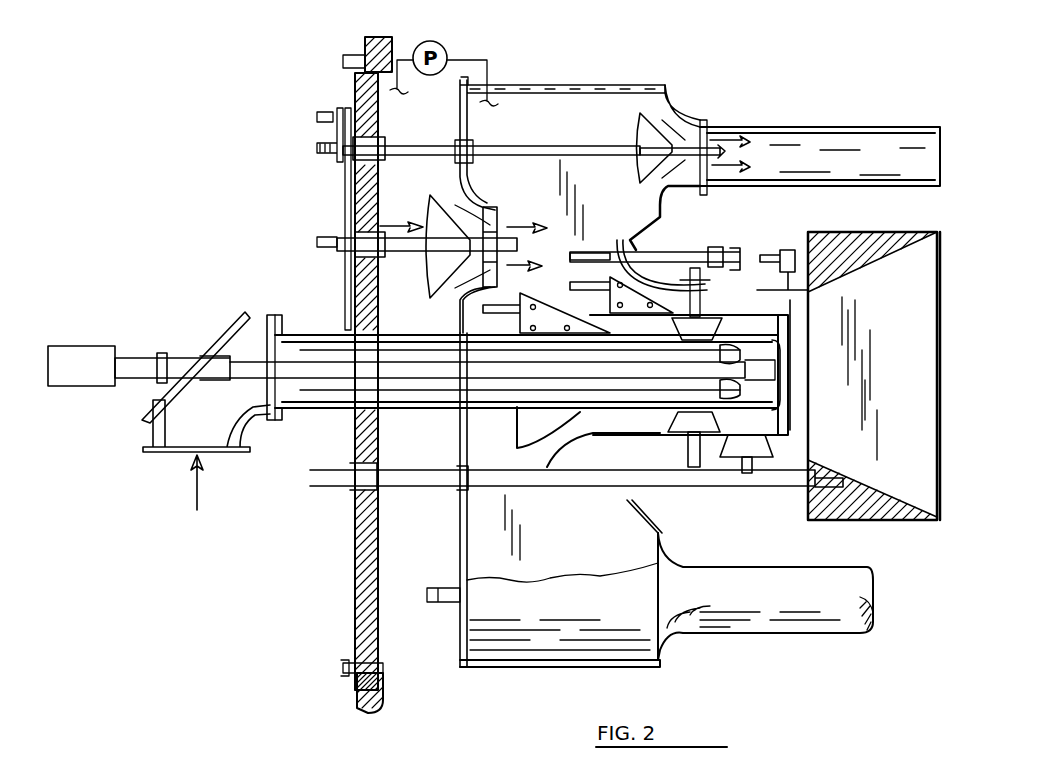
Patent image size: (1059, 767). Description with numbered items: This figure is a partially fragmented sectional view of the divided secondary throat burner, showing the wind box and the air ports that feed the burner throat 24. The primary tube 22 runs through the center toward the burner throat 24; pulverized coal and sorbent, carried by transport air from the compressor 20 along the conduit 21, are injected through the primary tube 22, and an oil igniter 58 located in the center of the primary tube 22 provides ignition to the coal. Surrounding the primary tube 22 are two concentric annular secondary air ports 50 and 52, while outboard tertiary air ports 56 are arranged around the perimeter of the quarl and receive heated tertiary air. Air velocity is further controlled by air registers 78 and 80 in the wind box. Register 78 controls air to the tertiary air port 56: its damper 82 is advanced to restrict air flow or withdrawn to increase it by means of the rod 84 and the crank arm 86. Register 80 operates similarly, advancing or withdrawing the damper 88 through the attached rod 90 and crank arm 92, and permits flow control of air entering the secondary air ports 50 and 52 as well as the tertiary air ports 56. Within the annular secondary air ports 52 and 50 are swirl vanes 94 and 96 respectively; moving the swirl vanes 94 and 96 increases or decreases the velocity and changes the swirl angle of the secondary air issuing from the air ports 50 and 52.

The compressor 20 is at (190, 412).
The conduit 21 is at (733, 388).
The primary tube 22 is at (765, 390).
The burner throat 24 is at (812, 372).
The annular secondary air port 50 is at (782, 447).
The annular secondary air port 52 is at (767, 328).
The tertiary air port 56 is at (918, 178).
The oil igniter 58 is at (413, 368).
The air register 78 is at (683, 148).
The air register 80 is at (468, 247).
The damper 82 is at (672, 122).
The rod 84 is at (578, 148).
The crank arm 86 is at (338, 137).
The damper 88 is at (443, 205).
The rod 90 is at (400, 243).
The crank arm 92 is at (333, 238).
The swirl vane 94 is at (757, 300).
The swirl vane 96 is at (707, 320).